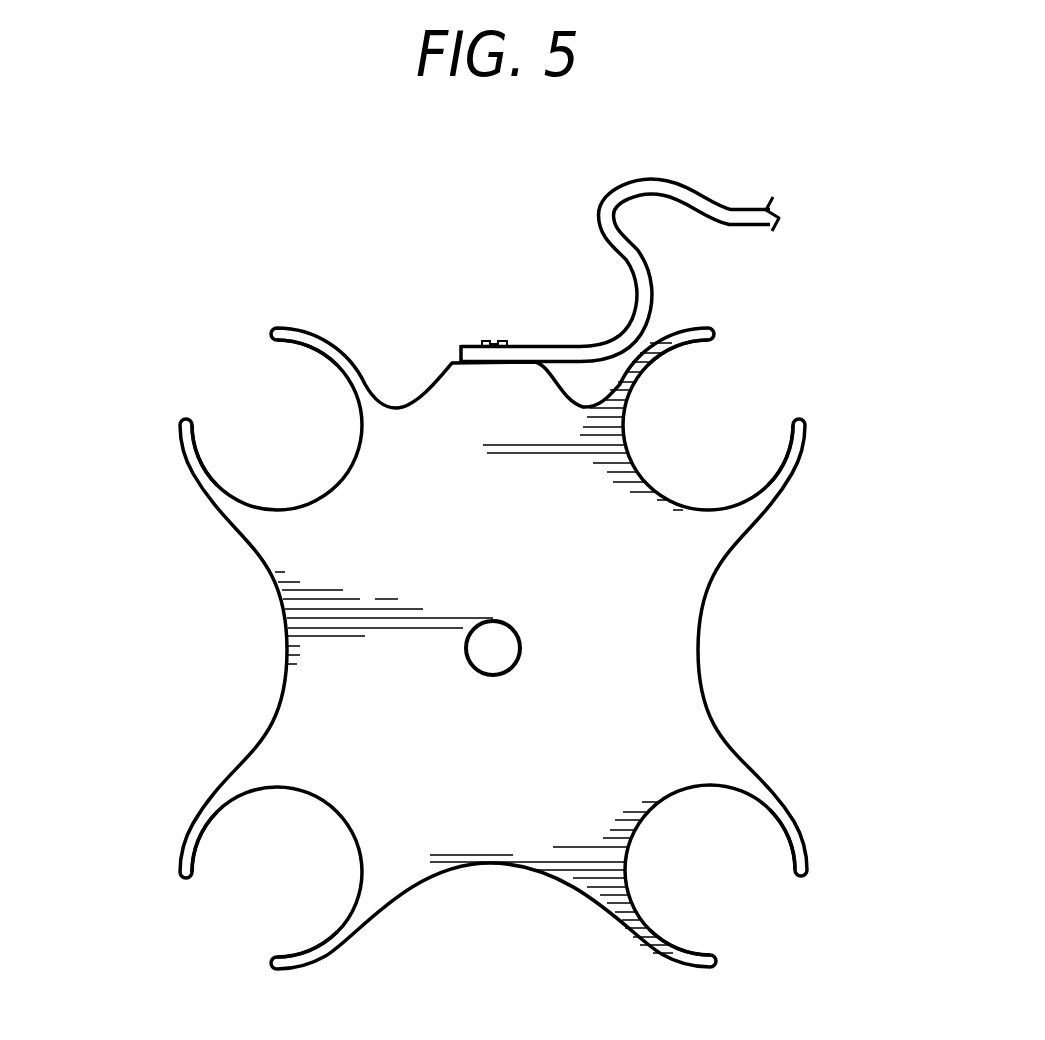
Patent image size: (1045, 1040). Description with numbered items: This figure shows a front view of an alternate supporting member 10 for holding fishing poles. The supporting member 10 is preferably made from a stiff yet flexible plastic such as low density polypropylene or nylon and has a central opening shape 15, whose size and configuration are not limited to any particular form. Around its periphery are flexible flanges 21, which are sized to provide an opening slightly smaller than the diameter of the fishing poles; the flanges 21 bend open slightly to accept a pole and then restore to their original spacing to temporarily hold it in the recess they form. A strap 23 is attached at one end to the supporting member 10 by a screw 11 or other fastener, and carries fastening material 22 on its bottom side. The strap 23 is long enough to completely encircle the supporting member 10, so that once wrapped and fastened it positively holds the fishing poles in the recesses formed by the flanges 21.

The supporting member 10 is at (484, 395).
The screw 11 is at (485, 338).
The opening shape 15 is at (505, 643).
The flexible flanges 21 is at (308, 328).
The fastening material 22 is at (717, 226).
The strap 23 is at (660, 178).